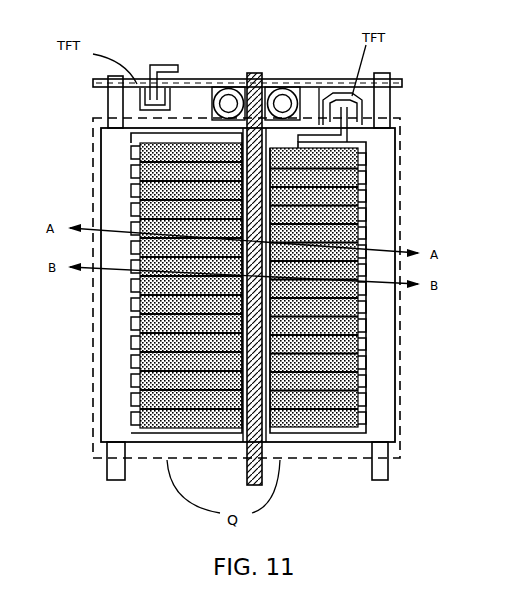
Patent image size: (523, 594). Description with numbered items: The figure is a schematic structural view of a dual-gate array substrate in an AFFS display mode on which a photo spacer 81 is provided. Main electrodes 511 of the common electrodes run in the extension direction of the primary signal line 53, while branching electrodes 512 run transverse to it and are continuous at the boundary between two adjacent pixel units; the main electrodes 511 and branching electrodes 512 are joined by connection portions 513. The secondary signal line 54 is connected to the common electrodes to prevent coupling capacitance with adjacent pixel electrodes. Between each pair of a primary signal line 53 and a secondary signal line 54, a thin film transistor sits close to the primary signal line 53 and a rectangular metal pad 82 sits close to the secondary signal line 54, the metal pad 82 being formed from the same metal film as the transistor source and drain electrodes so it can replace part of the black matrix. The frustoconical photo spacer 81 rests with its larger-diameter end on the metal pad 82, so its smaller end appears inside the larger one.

The primary signal line 53 is at (110, 108).
The secondary signal line 54 is at (262, 70).
The photo spacer 81 is at (278, 85).
The metal pad 82 is at (312, 100).
The main electrode 511 is at (390, 180).
The branching electrode 512 is at (281, 413).
The connection portion 513 is at (355, 130).